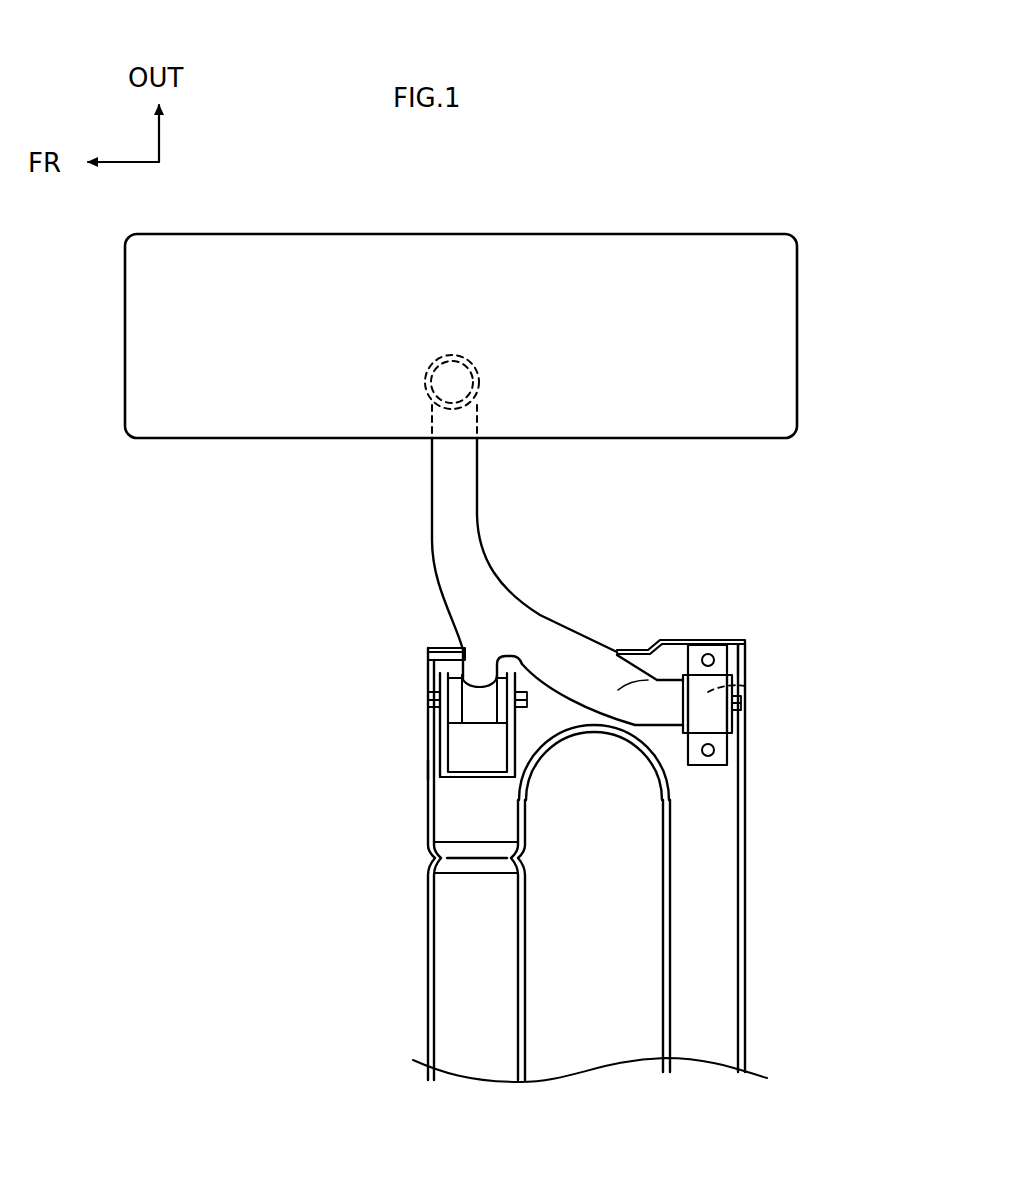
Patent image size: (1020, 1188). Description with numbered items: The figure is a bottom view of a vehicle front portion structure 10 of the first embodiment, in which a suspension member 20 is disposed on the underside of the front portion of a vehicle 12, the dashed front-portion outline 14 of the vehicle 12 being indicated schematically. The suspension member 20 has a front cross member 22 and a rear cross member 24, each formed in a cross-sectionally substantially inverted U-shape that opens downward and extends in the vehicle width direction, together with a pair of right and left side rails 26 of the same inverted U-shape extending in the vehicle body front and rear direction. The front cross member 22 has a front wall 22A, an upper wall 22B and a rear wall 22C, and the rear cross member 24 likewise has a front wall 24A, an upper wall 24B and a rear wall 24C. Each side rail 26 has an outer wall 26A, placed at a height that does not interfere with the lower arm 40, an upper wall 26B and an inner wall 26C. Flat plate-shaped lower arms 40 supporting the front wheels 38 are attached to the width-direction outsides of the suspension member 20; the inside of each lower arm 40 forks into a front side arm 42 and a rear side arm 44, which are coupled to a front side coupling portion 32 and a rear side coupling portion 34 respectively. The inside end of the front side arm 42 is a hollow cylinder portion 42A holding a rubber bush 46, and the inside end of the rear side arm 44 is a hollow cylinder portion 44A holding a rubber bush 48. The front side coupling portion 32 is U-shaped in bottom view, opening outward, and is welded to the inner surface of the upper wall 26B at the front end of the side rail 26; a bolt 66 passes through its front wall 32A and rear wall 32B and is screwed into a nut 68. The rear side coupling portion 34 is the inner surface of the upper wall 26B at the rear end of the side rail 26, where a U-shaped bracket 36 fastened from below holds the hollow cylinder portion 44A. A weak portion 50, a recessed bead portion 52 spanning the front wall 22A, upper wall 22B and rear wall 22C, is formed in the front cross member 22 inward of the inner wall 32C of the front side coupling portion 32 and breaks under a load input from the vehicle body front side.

The vehicle front portion structure 10 is at (368, 847).
The vehicle 12 is at (755, 200).
The pivot portion 14 is at (452, 358).
The suspension member 20 is at (786, 853).
The front cross member 22 is at (417, 1015).
The front wall 22A is at (433, 960).
The upper wall 22B is at (468, 1058).
The rear wall 22C is at (527, 995).
The rear cross member 24 is at (760, 978).
The front wall 24A is at (665, 928).
The upper wall 24B is at (700, 1042).
The rear wall 24C is at (752, 893).
The side rail 26 is at (642, 645).
The outer wall 26A is at (682, 640).
The upper wall 26B is at (740, 658).
The inner wall 26C is at (584, 733).
The front side coupling portion 32 is at (430, 743).
The front wall 32A is at (430, 686).
The rear wall 32B is at (522, 728).
The inner wall 32C is at (492, 780).
The rear side coupling portion 34 is at (737, 722).
The bracket 36 is at (728, 742).
The front wheel 38 is at (520, 263).
The lower arm 40 is at (420, 505).
The front side arm 42 is at (437, 662).
The hollow cylinder portion 42A is at (431, 770).
The rear side arm 44 is at (662, 712).
The hollow cylinder portion 44A is at (745, 686).
The rubber bush 46 is at (430, 720).
The rubber bush 48 is at (742, 732).
The weak portion 50 is at (422, 865).
The recessed bead portion 52 is at (485, 856).
The bolt 66 is at (453, 708).
The nut 68 is at (500, 663).